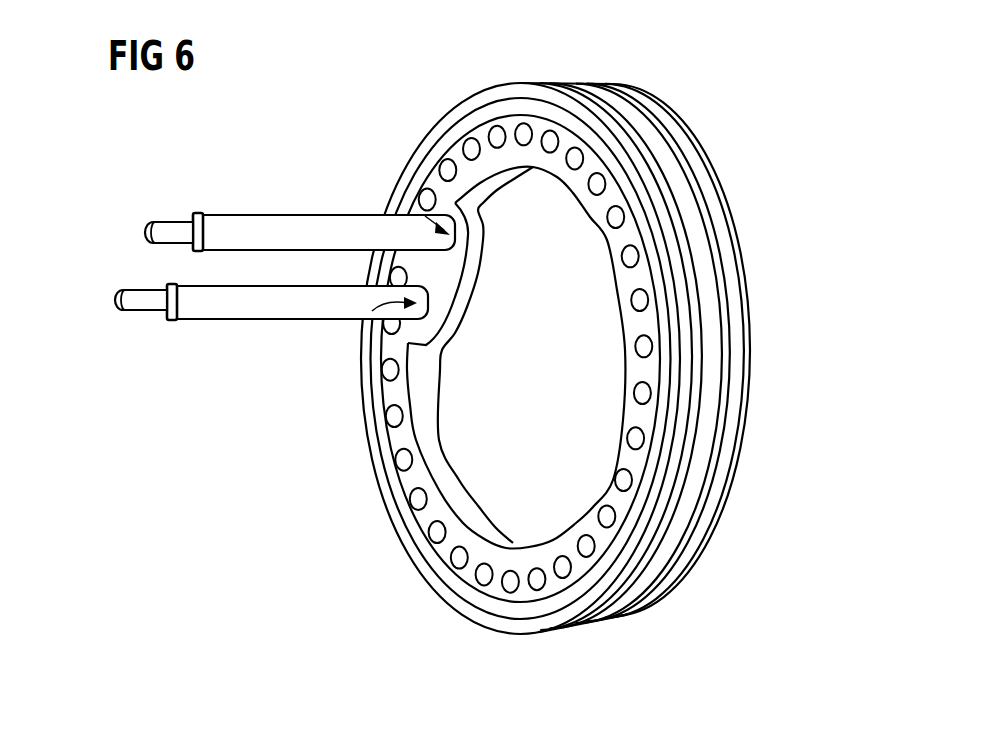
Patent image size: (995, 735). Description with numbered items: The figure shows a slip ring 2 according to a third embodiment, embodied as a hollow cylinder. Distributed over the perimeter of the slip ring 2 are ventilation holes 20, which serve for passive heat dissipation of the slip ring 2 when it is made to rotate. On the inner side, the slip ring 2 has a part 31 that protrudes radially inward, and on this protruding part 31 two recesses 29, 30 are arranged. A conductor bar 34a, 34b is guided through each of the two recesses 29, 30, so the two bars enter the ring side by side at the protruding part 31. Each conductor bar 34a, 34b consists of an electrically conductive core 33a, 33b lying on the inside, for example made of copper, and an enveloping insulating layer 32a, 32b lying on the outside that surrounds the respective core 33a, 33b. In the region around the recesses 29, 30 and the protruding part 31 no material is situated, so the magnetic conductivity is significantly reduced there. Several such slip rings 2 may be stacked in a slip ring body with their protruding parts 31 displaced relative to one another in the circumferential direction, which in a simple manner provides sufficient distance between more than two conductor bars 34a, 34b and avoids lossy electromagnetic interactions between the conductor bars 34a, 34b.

The slip ring 2 is at (726, 303).
The ventilation holes 20 is at (623, 461).
The recess 29 is at (442, 213).
The recess 30 is at (372, 326).
The protruding part 31 is at (390, 402).
The insulating layer 32a is at (206, 215).
The insulating layer 32b is at (178, 320).
The electrically conductive core 33a is at (168, 222).
The electrically conductive core 33b is at (140, 311).
The conductor bar 34a is at (292, 224).
The conductor bar 34b is at (266, 312).